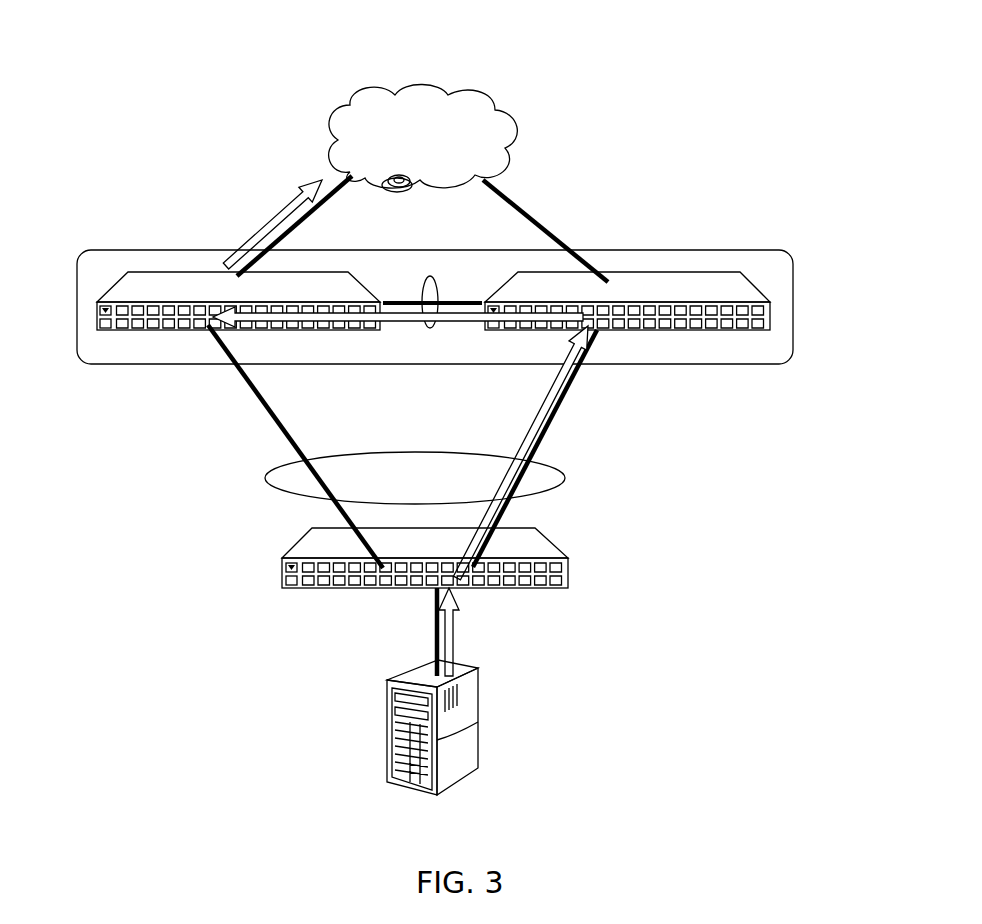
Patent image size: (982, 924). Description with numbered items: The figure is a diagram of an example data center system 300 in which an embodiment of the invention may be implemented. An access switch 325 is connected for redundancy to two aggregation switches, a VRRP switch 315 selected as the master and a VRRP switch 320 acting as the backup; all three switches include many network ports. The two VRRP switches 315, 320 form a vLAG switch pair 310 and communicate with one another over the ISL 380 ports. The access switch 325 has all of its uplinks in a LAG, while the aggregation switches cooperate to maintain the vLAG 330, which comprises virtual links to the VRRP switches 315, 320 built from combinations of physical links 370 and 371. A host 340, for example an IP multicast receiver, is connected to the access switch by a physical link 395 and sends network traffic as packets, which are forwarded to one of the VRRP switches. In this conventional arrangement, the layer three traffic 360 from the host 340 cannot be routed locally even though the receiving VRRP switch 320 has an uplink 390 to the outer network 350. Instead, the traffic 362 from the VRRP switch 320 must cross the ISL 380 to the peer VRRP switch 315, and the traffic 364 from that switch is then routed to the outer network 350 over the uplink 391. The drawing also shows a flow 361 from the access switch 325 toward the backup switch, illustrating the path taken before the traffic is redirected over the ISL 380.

The data center system 300 is at (719, 56).
The vLAG switch pair 310 is at (793, 266).
The VRRP switch 315 is at (128, 330).
The VRRP switch 320 is at (697, 332).
The access switch 325 is at (568, 576).
The vLAG 330 is at (568, 478).
The host 340 is at (470, 715).
The outer network 350 is at (518, 117).
The traffic 360 is at (455, 615).
The packet flow to backup switch 361 is at (520, 430).
The traffic 362 is at (398, 330).
The traffic 364 is at (268, 220).
The physical link 370 is at (560, 403).
The physical link 371 is at (265, 406).
The ISL 380 is at (436, 282).
The uplink 390 is at (545, 223).
The uplink 391 is at (325, 178).
The physical link 395 is at (433, 638).